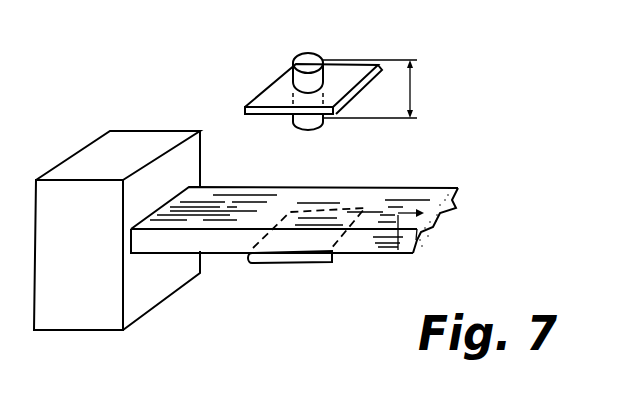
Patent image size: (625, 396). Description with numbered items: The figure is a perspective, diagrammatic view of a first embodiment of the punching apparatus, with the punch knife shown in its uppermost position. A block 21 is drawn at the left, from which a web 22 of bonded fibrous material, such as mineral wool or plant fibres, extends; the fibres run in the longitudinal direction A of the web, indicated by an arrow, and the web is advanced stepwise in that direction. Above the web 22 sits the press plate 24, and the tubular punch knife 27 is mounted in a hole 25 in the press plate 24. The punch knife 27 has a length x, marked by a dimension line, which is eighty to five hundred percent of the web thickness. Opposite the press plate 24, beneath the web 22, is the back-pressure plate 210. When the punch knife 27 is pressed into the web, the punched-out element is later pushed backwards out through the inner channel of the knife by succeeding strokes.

The housing block 21 is at (140, 147).
The web 22 is at (420, 193).
The back-pressure plate 210 is at (312, 258).
The press plate 24 is at (280, 93).
The hole 25 is at (330, 93).
The punch knife 27 is at (292, 124).
The longitudinal direction of the web A is at (415, 253).
The length of the punch knife x is at (417, 89).